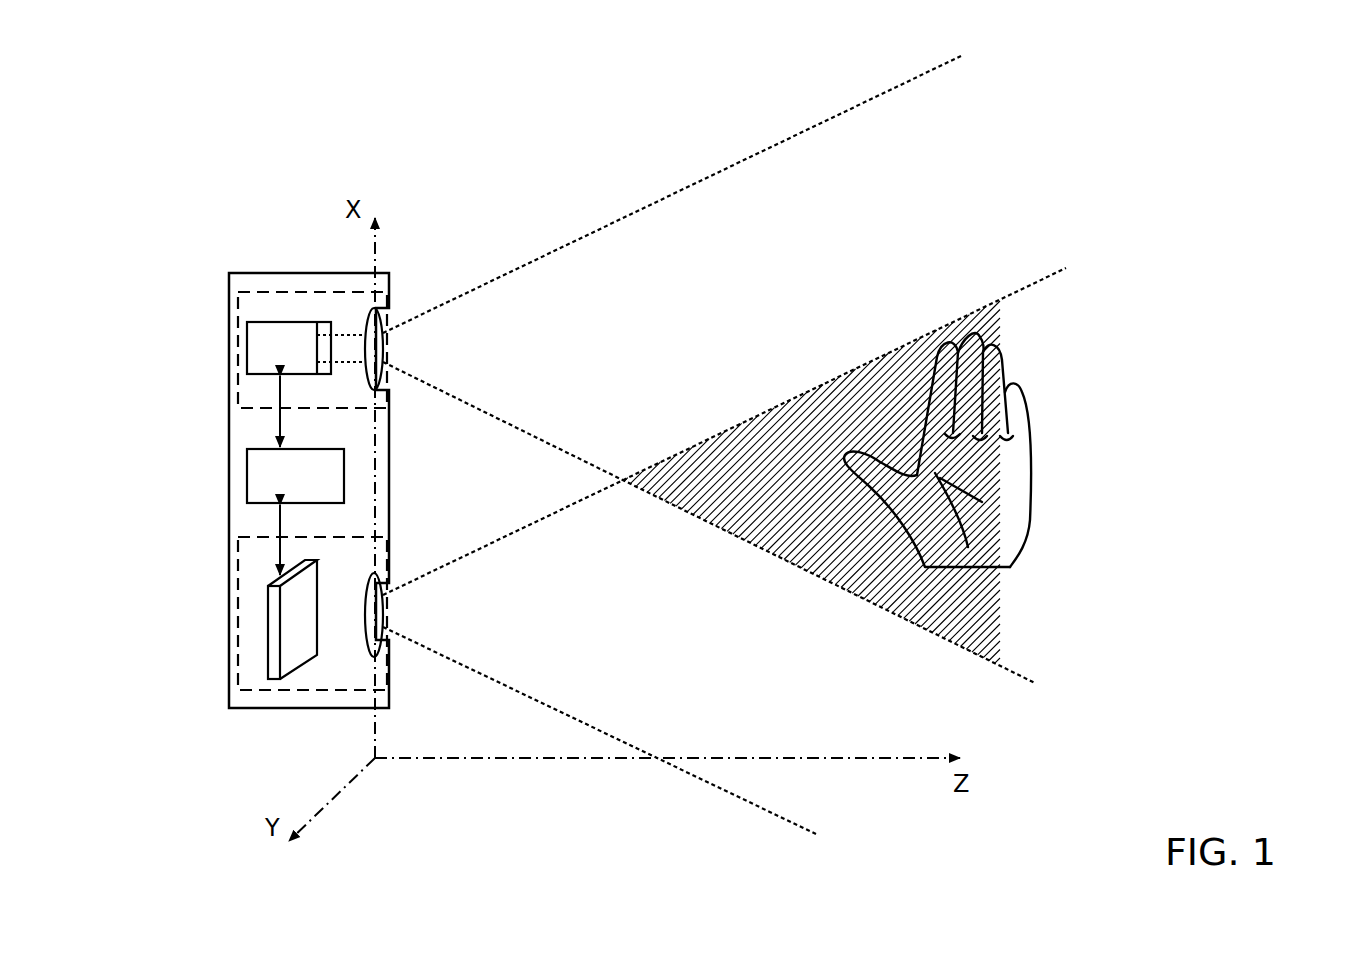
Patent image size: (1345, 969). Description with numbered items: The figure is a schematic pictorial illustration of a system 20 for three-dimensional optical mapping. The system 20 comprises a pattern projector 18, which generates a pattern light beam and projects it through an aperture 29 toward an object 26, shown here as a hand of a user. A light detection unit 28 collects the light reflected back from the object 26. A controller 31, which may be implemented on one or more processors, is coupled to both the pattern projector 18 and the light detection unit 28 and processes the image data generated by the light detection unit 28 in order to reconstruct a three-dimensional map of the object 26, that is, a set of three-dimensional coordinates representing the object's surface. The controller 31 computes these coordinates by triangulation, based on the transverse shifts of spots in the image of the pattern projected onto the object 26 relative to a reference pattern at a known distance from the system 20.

The system 20 is at (259, 273).
The pattern projector 18 is at (300, 322).
The aperture 29 is at (384, 350).
The controller 31 is at (247, 493).
The light detection unit 28 is at (305, 690).
The object 26 is at (1028, 394).